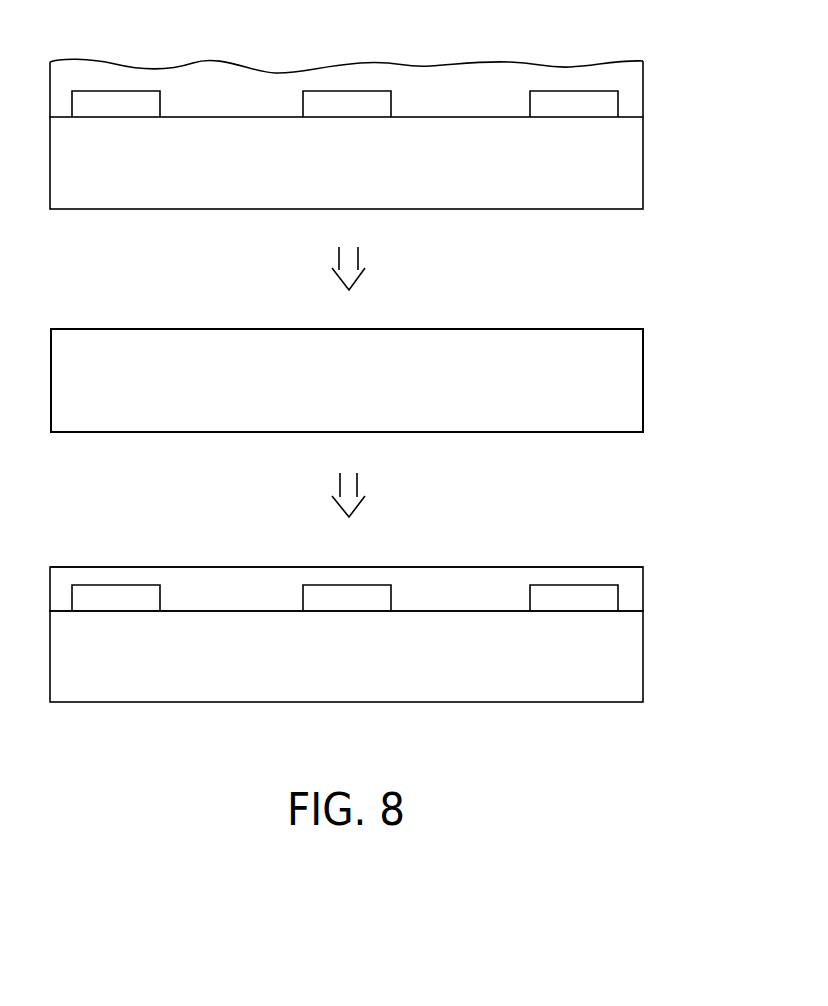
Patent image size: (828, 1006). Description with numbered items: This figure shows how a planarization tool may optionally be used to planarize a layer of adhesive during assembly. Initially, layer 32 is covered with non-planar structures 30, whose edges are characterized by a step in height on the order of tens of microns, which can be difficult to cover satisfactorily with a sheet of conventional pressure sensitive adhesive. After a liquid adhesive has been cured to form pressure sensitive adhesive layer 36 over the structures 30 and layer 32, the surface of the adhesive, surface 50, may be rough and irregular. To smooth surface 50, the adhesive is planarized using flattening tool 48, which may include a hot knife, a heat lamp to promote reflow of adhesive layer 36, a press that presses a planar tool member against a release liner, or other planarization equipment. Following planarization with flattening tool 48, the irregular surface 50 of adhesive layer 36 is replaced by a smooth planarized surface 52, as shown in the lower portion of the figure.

The structures 30 is at (612, 101).
The layer 32 is at (633, 156).
The pressure sensitive adhesive layer 36 is at (627, 72).
The flattening tool 48 is at (633, 378).
The surface 50 is at (470, 61).
The smooth planarized surface 52 is at (519, 566).